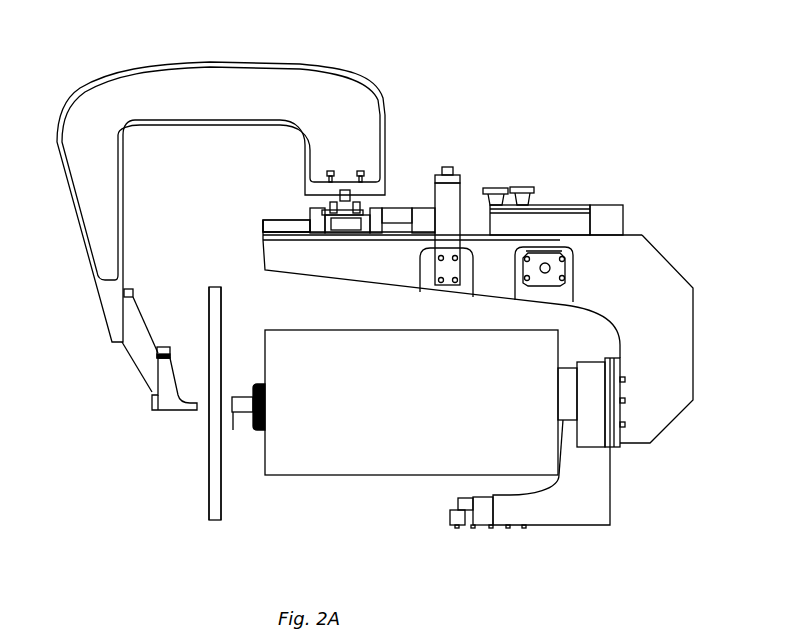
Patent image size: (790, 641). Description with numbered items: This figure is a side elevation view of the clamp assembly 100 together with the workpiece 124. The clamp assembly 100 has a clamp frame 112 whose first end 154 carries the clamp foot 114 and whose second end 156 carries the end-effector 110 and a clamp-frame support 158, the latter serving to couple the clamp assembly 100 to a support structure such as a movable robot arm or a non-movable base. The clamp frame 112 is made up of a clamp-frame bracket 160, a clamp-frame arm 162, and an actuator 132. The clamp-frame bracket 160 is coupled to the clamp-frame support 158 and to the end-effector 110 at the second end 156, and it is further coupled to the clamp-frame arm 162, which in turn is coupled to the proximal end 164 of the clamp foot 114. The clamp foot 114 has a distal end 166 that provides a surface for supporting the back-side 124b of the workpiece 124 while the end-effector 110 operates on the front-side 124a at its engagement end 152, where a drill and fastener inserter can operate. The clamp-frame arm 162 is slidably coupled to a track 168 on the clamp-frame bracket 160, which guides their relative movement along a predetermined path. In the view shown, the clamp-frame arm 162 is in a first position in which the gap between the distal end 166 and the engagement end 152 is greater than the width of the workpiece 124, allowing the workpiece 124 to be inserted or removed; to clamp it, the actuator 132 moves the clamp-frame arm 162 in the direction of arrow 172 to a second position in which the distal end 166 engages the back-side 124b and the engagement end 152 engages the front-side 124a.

The clamp assembly 100 is at (632, 133).
The end-effector 110 is at (377, 465).
The clamp frame 112 is at (494, 118).
The clamp foot 114 is at (172, 402).
The workpiece 124 is at (189, 498).
The front-side of the workpiece 124a is at (222, 293).
The back-side of the workpiece 124b is at (208, 290).
The actuator 132 is at (438, 180).
The engagement end 152 is at (232, 432).
The first end of the clamp frame 154 is at (110, 358).
The second end of the clamp frame 156 is at (625, 457).
The clamp-frame support 158 is at (600, 508).
The clamp-frame bracket 160 is at (660, 268).
The clamp-frame arm 162 is at (222, 75).
The proximal end of the clamp foot 164 is at (157, 363).
The distal end of the clamp foot 166 is at (203, 412).
The track 168 is at (280, 225).
The arrow 172 is at (197, 379).